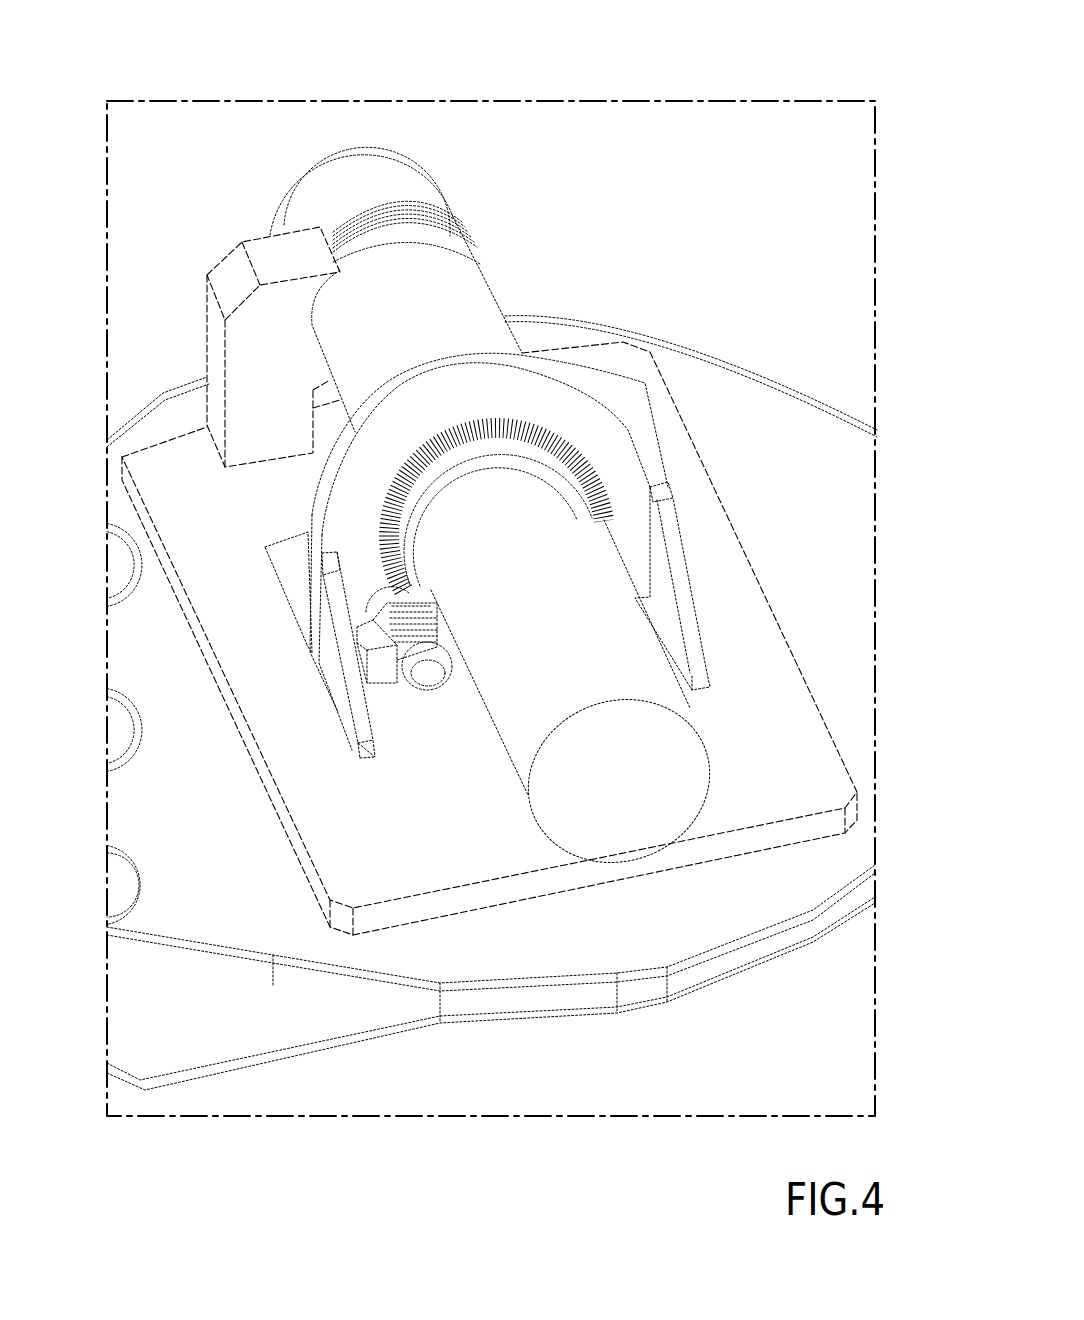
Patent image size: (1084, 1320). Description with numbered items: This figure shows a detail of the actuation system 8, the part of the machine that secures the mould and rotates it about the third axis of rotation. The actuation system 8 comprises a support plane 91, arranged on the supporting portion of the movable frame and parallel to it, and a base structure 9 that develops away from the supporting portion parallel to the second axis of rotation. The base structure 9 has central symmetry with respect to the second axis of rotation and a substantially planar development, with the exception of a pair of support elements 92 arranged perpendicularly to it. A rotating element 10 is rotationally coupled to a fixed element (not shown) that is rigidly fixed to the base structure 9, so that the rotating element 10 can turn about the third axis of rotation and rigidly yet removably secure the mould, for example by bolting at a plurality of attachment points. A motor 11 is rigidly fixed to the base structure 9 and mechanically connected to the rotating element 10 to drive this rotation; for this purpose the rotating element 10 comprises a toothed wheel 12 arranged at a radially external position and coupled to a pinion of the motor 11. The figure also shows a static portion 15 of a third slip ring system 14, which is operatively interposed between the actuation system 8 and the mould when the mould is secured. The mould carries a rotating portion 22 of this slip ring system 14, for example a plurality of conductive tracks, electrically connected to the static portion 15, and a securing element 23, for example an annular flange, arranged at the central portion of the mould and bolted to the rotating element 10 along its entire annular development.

The actuation system 8 is at (273, 897).
The base structure 9 is at (603, 405).
The rotating element 10 is at (613, 462).
The motor 11 is at (425, 703).
The toothed wheel 12 is at (520, 408).
The third slip ring system 14 is at (240, 215).
The static portion 15 is at (208, 257).
The rotating portion 22 is at (457, 213).
The securing element 23 is at (603, 500).
The support plane 91 is at (800, 757).
The support elements 92 is at (350, 705).